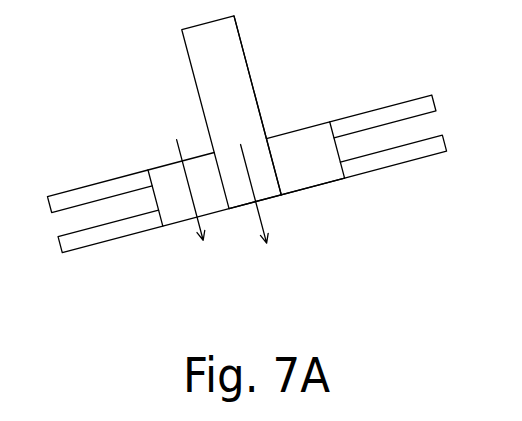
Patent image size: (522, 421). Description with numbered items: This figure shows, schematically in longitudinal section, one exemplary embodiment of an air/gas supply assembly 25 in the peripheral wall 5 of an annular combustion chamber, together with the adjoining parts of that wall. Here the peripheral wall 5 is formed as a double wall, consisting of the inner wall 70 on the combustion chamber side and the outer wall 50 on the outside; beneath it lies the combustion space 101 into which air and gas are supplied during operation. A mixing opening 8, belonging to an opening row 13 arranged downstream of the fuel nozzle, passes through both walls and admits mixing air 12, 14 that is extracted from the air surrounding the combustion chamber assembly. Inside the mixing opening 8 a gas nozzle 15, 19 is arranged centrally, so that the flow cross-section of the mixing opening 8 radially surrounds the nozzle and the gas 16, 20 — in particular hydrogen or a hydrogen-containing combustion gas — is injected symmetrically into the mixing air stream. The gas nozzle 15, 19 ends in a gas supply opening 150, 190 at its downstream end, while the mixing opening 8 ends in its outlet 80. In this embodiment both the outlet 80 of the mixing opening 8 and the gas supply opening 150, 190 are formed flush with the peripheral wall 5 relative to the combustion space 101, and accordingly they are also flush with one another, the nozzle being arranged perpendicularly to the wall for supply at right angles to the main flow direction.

The peripheral wall 5 is at (122, 168).
The outer wall 50 is at (87, 187).
The inner wall 70 is at (78, 245).
The mixing air 12 is at (188, 202).
The mixing air 14 is at (188, 202).
The gas nozzle 15 is at (183, 110).
The gas nozzle 19 is at (197, 53).
The air/gas supply assembly 25 is at (265, 103).
The gas 16 is at (274, 209).
The gas 20 is at (274, 209).
The mixing opening 8 is at (356, 123).
The opening row 13 is at (313, 132).
The outlet 80 is at (333, 182).
The gas supply opening 150 is at (333, 237).
The gas supply opening 190 is at (265, 200).
The combustion space 101 is at (259, 322).